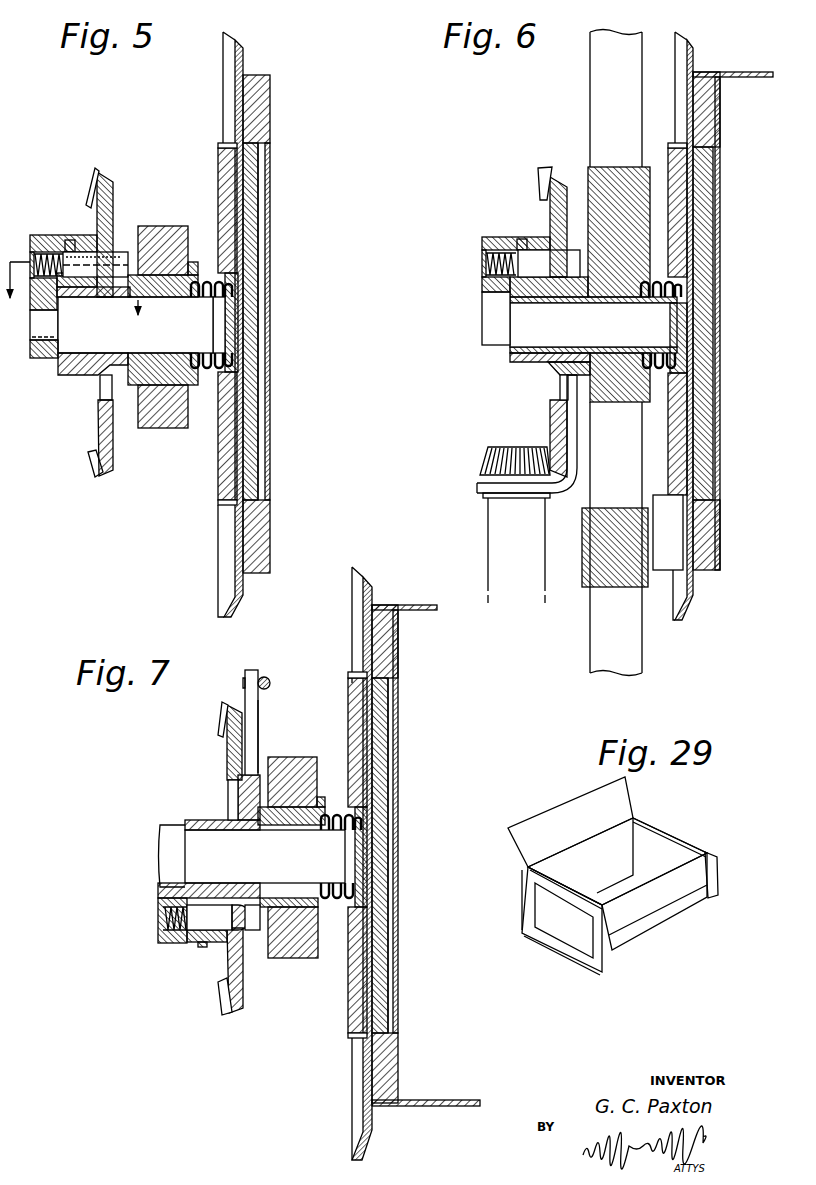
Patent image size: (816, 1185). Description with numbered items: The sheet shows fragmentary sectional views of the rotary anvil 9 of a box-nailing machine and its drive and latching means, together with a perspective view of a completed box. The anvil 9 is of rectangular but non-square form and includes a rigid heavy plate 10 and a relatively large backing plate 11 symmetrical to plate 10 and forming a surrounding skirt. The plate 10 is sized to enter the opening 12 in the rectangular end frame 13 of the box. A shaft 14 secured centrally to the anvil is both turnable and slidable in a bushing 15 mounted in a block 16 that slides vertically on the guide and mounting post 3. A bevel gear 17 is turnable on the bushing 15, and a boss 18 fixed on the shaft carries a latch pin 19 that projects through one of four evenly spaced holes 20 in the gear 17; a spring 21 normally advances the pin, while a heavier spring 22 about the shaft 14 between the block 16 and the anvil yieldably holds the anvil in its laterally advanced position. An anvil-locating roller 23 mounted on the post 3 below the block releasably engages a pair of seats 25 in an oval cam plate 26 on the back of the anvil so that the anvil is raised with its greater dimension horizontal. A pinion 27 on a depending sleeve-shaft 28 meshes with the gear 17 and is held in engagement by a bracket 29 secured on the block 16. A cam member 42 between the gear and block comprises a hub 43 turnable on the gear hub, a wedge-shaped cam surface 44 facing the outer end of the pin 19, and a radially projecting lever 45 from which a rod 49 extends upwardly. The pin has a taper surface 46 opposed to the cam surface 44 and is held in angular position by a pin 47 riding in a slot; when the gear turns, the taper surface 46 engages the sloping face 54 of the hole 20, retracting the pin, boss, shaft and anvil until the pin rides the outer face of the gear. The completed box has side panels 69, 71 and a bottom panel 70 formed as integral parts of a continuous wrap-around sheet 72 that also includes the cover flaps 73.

In FIG. 5, the guide and mounting post 3 is at (160, 228).
In FIG. 6, the guide and mounting post 3 is at (593, 78).
In FIG. 7, the guide and mounting post 3 is at (300, 960).
In FIG. 5, the rotary anvil 9 is at (261, 172).
In FIG. 6, the rotary anvil 9 is at (716, 283).
In FIG. 7, the rotary anvil 9 is at (390, 750).
In FIG. 5, the anvil plate 10 is at (256, 206).
In FIG. 6, the anvil plate 10 is at (703, 195).
In FIG. 7, the anvil plate 10 is at (380, 715).
In FIG. 5, the backing plate 11 is at (240, 552).
In FIG. 6, the backing plate 11 is at (684, 97).
In FIG. 7, the backing plate 11 is at (367, 1080).
In FIG. 5, the opening 12 is at (262, 241).
In FIG. 7, the opening 12 is at (393, 786).
In FIG. 29, the opening 12 is at (553, 928).
In FIG. 5, the end frame 13 is at (252, 110).
In FIG. 6, the end frame 13 is at (707, 112).
In FIG. 7, the end frame 13 is at (385, 650).
In FIG. 29, the end frame 13 is at (675, 838).
In FIG. 5, the shaft 14 is at (246, 313).
In FIG. 6, the shaft 14 is at (484, 342).
In FIG. 7, the shaft 14 is at (350, 862).
In FIG. 5, the bushing 15 is at (66, 345).
In FIG. 6, the bushing 15 is at (512, 360).
In FIG. 7, the bushing 15 is at (209, 859).
In FIG. 5, the block 16 is at (155, 430).
In FIG. 6, the block 16 is at (612, 405).
In FIG. 7, the block 16 is at (292, 832).
In FIG. 5, the bevel gear 17 is at (92, 462).
In FIG. 6, the bevel gear 17 is at (548, 190).
In FIG. 7, the bevel gear 17 is at (225, 995).
In FIG. 5, the boss 18 is at (50, 237).
In FIG. 6, the boss 18 is at (488, 283).
In FIG. 7, the boss 18 is at (168, 945).
In FIG. 5, the latch pin 19 is at (112, 262).
In FIG. 6, the latch pin 19 is at (570, 300).
In FIG. 7, the latch pin 19 is at (198, 930).
In FIG. 5, the hole 20 is at (105, 385).
In FIG. 6, the hole 20 is at (561, 390).
In FIG. 7, the hole 20 is at (236, 825).
In FIG. 5, the spring 21 is at (38, 235).
In FIG. 7, the spring 21 is at (162, 922).
In FIG. 5, the heavier spring 22 is at (195, 300).
In FIG. 6, the heavier spring 22 is at (652, 300).
In FIG. 7, the heavier spring 22 is at (335, 832).
In FIG. 6, the anvil-locating roller 23 is at (666, 565).
In FIG. 5, the seat 25 is at (228, 143).
In FIG. 6, the seat 25 is at (676, 147).
In FIG. 7, the seat 25 is at (352, 673).
In FIG. 5, the cam plate 26 is at (222, 182).
In FIG. 6, the cam plate 26 is at (672, 428).
In FIG. 7, the cam plate 26 is at (350, 718).
In FIG. 6, the pinion 27 is at (498, 462).
In FIG. 6, the sleeve-shaft 28 is at (497, 530).
In FIG. 6, the bracket 29 is at (560, 497).
In FIG. 7, the cam member 42 is at (262, 753).
In FIG. 5, the hub 43 is at (110, 299).
In FIG. 6, the hub 43 is at (594, 347).
In FIG. 7, the hub 43 is at (265, 856).
In FIG. 7, the cam surface 44 is at (252, 932).
In FIG. 7, the lever 45 is at (255, 712).
In FIG. 7, the taper surface 46 is at (228, 932).
In FIG. 5, the pin 47 is at (71, 240).
In FIG. 7, the rod 49 is at (270, 680).
In FIG. 5, the sloping face 54 is at (108, 250).
In FIG. 6, the sloping face 54 is at (548, 300).
In FIG. 7, the sloping face 54 is at (226, 786).
In FIG. 29, the side panel 69 is at (678, 922).
In FIG. 29, the bottom panel 70 is at (560, 955).
In FIG. 29, the side panel 71 is at (520, 900).
In FIG. 29, the wrap-around sheet 72 is at (516, 917).
In FIG. 29, the cover flap 73 is at (527, 843).